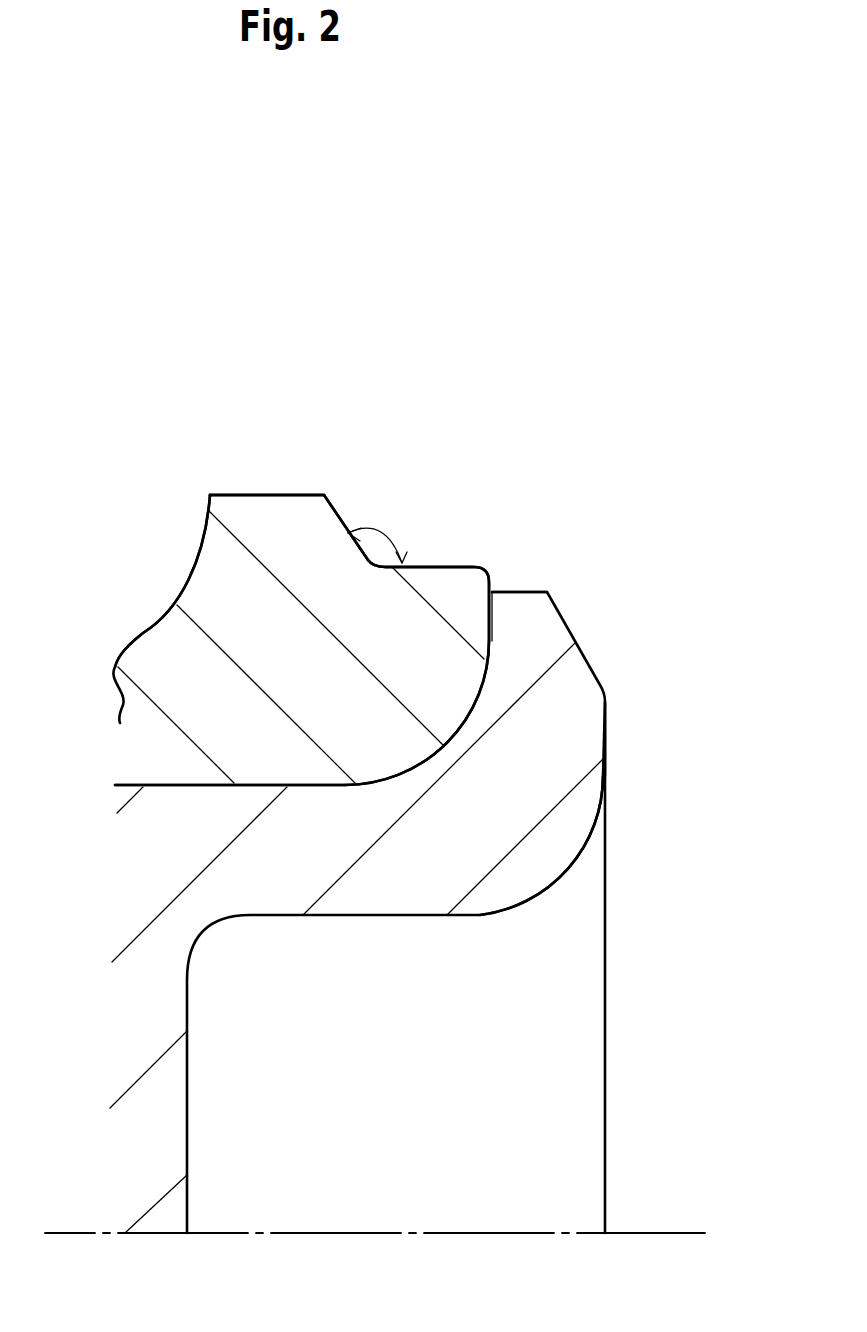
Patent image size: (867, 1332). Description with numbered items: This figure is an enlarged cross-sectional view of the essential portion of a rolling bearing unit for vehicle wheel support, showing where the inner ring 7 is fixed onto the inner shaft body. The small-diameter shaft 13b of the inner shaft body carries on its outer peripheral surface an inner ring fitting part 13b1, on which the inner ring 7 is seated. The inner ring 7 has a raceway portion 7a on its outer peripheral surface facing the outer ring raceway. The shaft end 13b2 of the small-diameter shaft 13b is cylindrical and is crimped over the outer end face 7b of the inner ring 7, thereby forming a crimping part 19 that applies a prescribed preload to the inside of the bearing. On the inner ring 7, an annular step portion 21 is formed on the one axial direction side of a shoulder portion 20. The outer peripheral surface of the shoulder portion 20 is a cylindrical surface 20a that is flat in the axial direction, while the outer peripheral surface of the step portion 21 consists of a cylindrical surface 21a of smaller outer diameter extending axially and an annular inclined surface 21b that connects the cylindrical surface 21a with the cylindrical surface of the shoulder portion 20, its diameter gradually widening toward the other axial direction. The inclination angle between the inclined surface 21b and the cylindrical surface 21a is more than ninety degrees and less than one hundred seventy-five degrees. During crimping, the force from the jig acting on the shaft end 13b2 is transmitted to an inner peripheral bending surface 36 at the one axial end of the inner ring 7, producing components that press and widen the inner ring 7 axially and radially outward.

The inner ring 7 is at (214, 491).
The raceway portion 7a is at (143, 633).
The outer end face 7b is at (492, 628).
The small-diameter shaft 13b is at (18, 1040).
The inner ring fitting part 13b1 is at (168, 787).
The shaft end 13b2 is at (553, 842).
The crimping part 19 is at (567, 742).
The shoulder portion 20 is at (300, 518).
The cylindrical surface 20a is at (263, 494).
The step portion 21 is at (425, 587).
The cylindrical surface 21a is at (450, 562).
The inclined surface 21b is at (350, 532).
The bending surface 36 is at (453, 735).